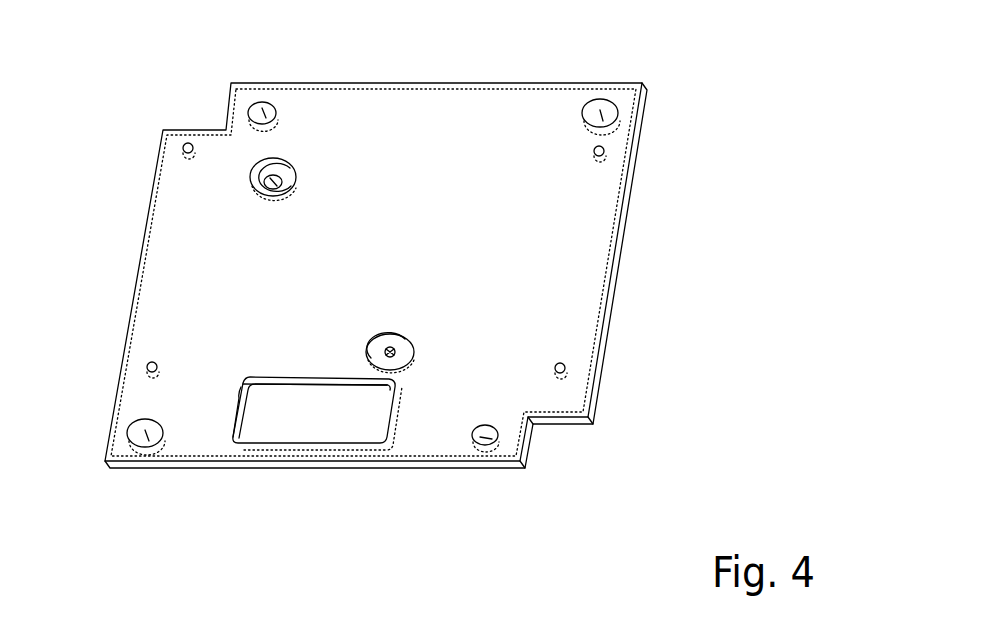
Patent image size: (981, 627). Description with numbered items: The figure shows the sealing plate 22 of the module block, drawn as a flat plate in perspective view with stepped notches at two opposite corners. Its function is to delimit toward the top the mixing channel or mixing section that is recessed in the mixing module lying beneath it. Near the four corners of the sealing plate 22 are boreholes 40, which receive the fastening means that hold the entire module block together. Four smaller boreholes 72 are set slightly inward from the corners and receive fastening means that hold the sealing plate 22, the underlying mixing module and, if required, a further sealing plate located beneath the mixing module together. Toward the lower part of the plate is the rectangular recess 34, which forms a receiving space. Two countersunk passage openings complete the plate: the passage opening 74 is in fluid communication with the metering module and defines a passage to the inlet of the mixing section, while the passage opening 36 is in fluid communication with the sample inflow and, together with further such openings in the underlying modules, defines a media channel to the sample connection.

The sealing plate 22 is at (643, 243).
The recess 34 is at (308, 433).
The passage opening 36 is at (278, 180).
The boreholes 40 is at (262, 106).
The boreholes 72 is at (187, 145).
The passage opening 74 is at (392, 350).